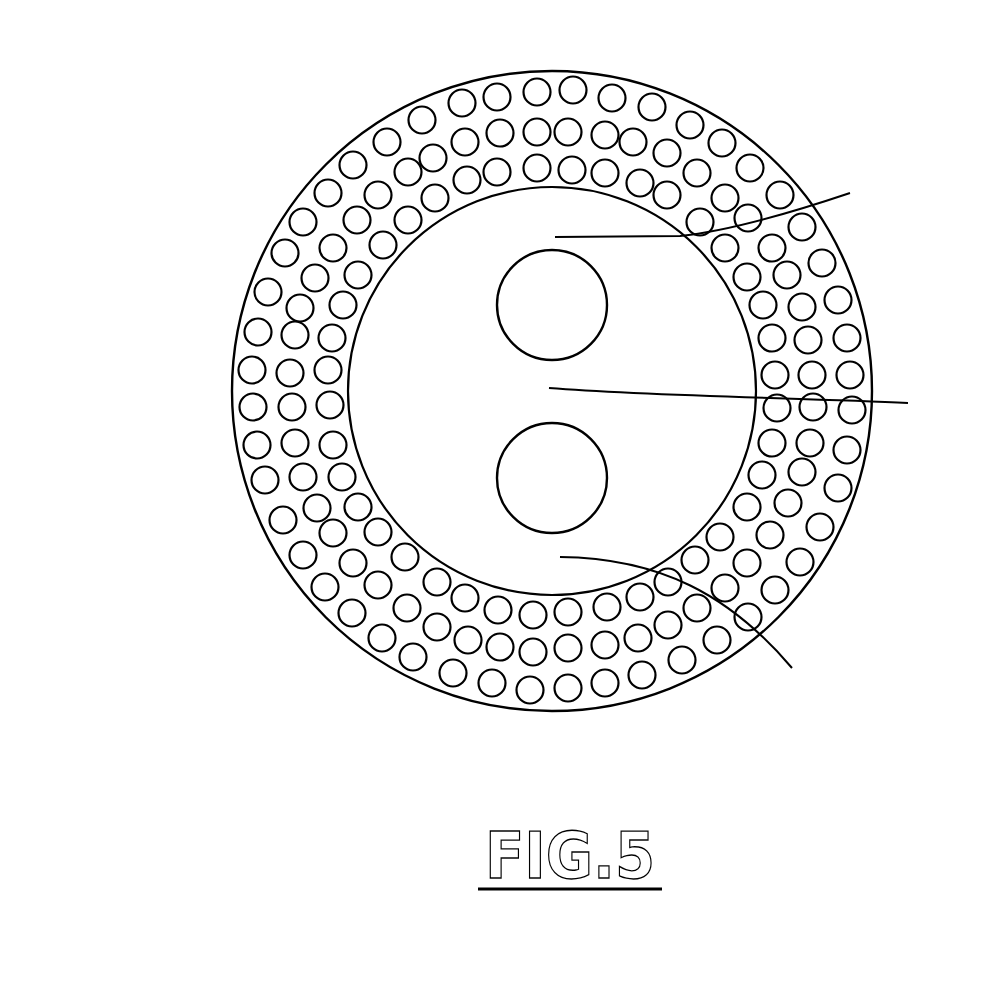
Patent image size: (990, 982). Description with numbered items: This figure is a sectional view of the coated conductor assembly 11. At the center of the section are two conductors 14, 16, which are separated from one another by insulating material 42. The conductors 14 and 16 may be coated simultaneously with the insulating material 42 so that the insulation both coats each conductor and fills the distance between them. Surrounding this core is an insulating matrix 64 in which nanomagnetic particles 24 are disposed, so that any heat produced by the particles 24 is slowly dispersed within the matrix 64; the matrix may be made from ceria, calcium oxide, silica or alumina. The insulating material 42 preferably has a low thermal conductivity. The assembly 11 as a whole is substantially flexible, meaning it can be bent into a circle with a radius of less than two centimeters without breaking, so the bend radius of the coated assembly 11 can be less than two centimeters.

The assembly 11 is at (252, 163).
The conductor 14 is at (575, 312).
The conductor 16 is at (577, 469).
The nanomagnetic particles 24 is at (302, 557).
The insulating material 42 is at (758, 434).
The insulating matrix 64 is at (670, 120).